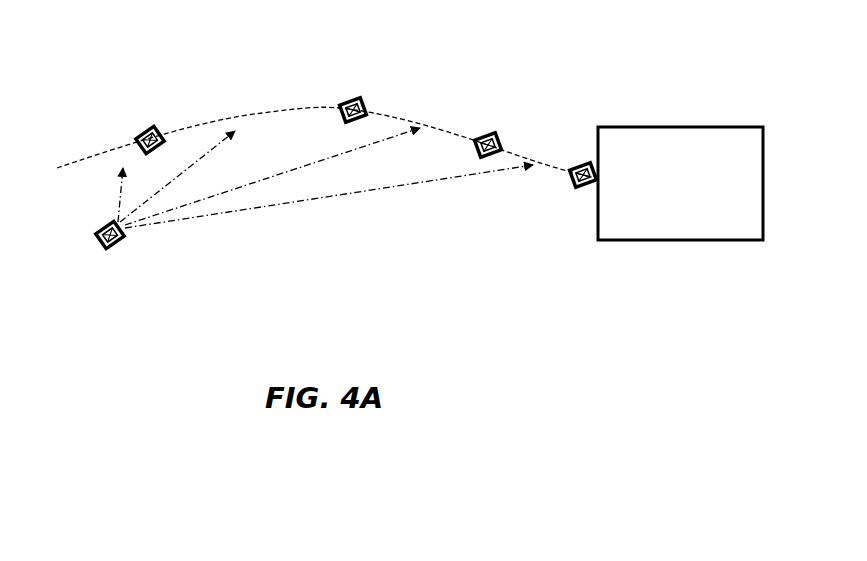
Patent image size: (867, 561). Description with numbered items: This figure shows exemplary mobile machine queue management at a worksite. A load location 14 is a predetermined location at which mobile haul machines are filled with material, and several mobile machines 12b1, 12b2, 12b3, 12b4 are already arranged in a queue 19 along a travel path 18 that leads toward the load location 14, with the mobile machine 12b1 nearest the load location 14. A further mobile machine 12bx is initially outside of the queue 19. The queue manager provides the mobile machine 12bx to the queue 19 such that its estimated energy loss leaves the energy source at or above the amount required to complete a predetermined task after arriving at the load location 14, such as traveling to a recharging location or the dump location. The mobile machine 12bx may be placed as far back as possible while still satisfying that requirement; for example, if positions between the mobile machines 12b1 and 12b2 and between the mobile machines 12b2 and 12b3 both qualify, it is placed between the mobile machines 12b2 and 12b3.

The travel path 18 is at (60, 167).
The queue 19 is at (289, 78).
The mobile machine 12bx is at (99, 250).
The mobile machine 12b4 is at (148, 127).
The mobile machine 12b3 is at (357, 96).
The mobile machine 12b2 is at (498, 132).
The mobile machine 12b1 is at (583, 161).
The load location 14 is at (680, 183).